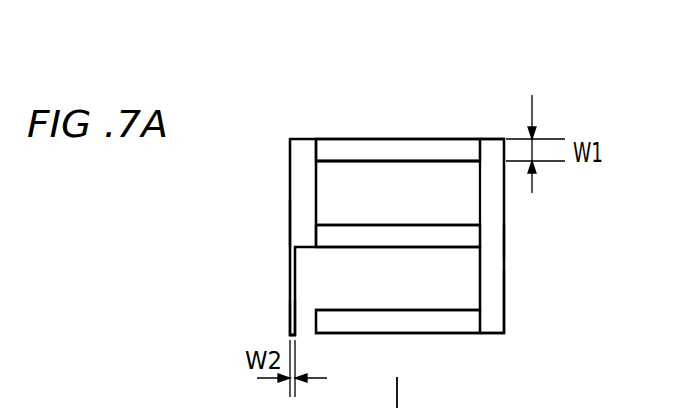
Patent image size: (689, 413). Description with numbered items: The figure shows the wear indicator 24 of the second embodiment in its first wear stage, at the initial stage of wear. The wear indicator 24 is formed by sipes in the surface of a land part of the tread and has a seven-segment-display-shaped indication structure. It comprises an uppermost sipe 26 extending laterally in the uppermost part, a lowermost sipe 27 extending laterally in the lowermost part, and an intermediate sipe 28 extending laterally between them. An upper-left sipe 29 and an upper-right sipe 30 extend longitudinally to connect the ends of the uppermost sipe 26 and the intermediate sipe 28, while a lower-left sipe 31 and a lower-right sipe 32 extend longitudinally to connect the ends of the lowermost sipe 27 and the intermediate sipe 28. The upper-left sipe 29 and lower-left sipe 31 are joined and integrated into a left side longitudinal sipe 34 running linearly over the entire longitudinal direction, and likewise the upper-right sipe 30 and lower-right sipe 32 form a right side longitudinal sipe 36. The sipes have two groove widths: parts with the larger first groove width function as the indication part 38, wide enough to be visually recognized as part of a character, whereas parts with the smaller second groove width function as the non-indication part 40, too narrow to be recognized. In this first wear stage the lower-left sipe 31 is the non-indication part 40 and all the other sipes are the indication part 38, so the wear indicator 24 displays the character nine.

The wear indicator 24 is at (413, 41).
The uppermost sipe 26 is at (413, 147).
The lowermost sipe 27 is at (432, 325).
The intermediate sipe 28 is at (411, 237).
The upper-left sipe 29 is at (290, 189).
The upper-right sipe 30 is at (500, 200).
The lower-left sipe 31 is at (290, 276).
The lower-right sipe 32 is at (503, 288).
The left side longitudinal sipe 34 is at (290, 228).
The right side longitudinal sipe 36 is at (503, 243).
The indication part 38 is at (336, 152).
The non-indication part 40 is at (290, 313).